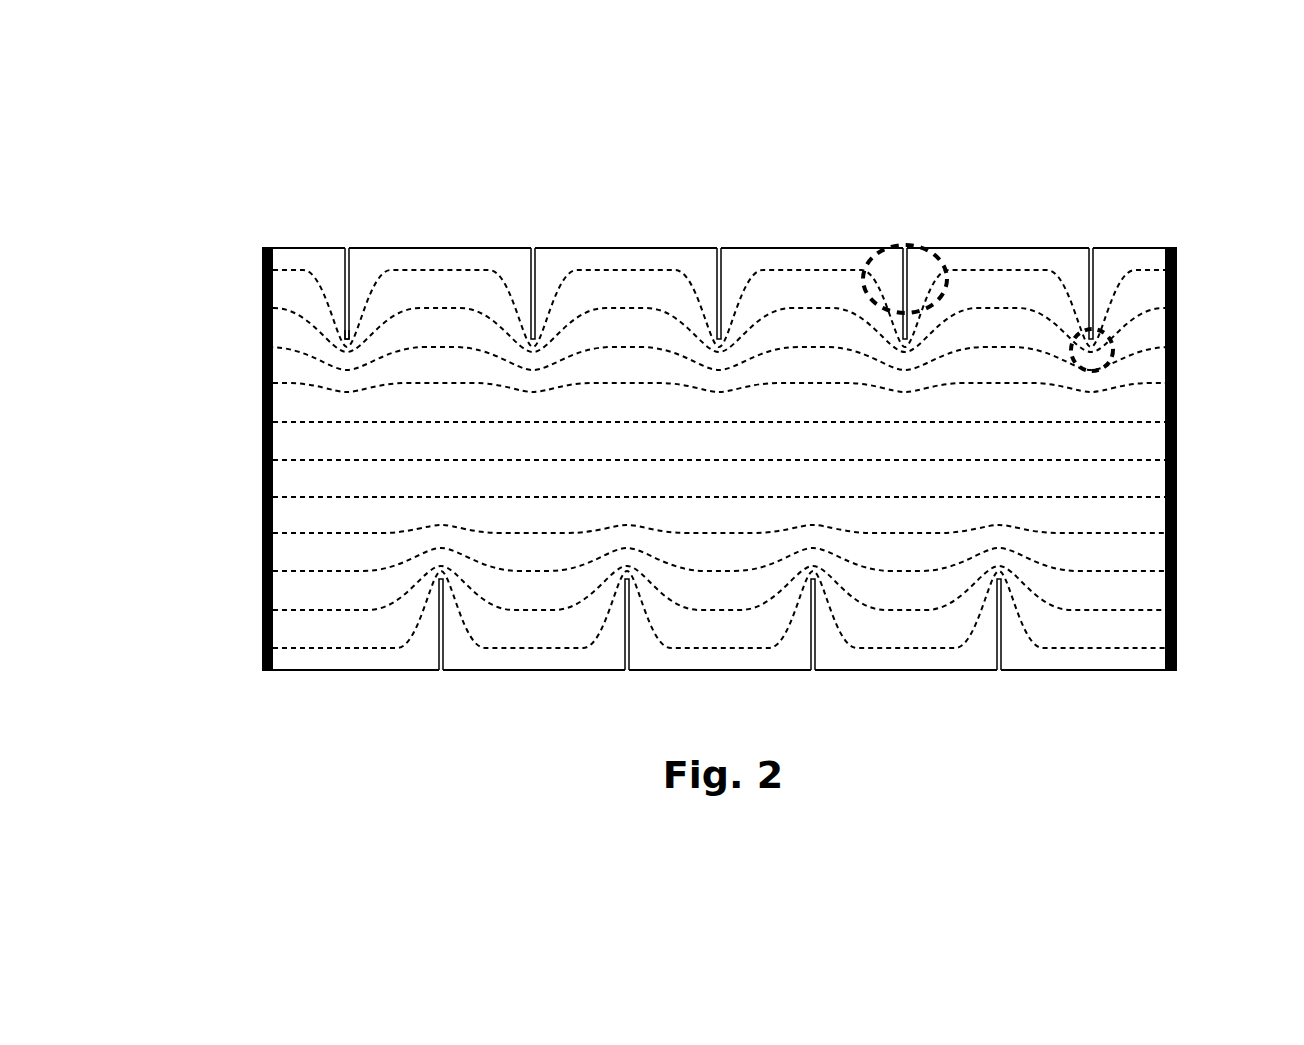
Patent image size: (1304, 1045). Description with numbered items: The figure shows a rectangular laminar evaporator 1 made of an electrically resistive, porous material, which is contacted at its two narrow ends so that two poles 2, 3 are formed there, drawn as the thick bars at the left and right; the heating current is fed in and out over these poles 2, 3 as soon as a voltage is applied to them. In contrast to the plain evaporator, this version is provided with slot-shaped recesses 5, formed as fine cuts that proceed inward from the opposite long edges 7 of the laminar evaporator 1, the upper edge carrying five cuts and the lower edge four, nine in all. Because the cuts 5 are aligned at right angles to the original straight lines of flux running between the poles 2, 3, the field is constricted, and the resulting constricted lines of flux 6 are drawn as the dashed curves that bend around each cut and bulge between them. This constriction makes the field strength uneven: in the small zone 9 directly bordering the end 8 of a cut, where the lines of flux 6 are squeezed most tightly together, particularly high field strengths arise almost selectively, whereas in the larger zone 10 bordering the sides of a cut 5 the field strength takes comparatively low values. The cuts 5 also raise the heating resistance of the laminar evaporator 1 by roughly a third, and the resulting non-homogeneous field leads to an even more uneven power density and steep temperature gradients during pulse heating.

The laminar evaporator 1 is at (378, 141).
The pole 2 is at (265, 553).
The pole 3 is at (1175, 557).
The slot-shaped recess 5 is at (534, 293).
The constricted lines of flux 6 is at (467, 270).
The edge 7 is at (759, 236).
The end of cut 8 is at (343, 338).
The zone of high field strength 9 is at (1124, 360).
The zone of low field strength 10 is at (940, 247).